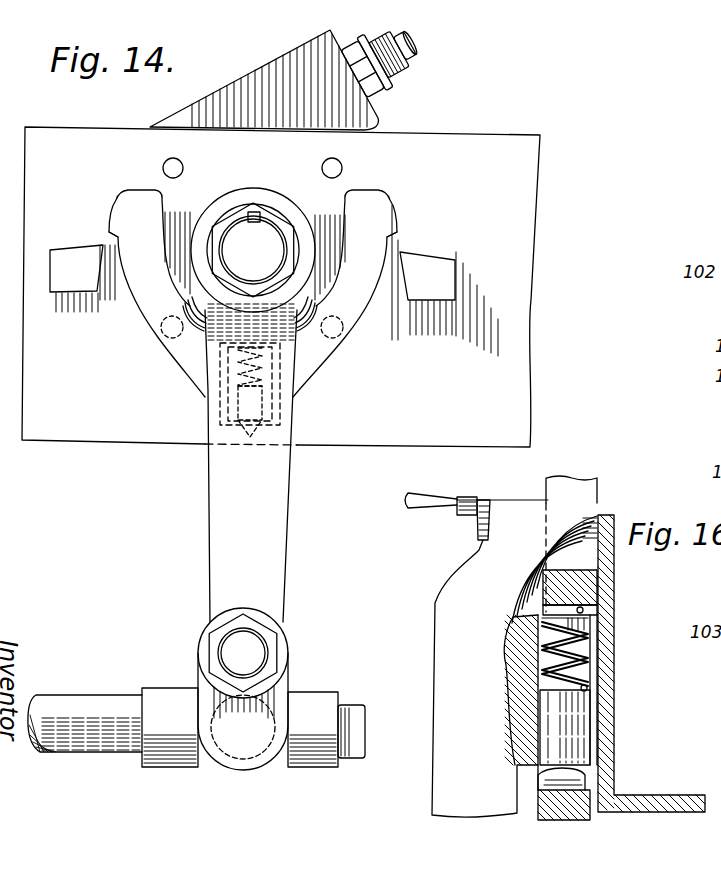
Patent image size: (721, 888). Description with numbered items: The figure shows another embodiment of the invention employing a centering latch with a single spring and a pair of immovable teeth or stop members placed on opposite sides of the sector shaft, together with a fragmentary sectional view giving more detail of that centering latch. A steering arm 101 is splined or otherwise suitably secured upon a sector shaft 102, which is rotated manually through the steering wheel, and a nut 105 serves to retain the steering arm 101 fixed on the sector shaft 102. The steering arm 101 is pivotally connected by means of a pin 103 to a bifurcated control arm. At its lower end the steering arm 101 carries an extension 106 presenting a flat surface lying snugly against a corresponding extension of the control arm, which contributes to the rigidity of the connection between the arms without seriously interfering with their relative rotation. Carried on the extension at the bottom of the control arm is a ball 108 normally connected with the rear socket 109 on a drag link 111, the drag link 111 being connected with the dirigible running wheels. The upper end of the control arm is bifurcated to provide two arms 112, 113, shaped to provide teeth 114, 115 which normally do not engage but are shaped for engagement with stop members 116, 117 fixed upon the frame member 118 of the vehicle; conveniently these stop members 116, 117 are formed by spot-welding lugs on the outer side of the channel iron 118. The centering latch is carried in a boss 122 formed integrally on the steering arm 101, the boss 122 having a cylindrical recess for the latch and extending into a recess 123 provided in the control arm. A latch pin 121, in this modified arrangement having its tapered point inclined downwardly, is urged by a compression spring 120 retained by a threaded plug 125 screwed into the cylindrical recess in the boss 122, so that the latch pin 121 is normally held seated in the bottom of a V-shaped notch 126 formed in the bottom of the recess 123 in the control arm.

In FIG. 14, the steering arm 101 is at (276, 546).
In FIG. 16, the steering arm 101 is at (501, 655).
In FIG. 14, the sector shaft 102 is at (262, 236).
In FIG. 14, the pin 103 is at (238, 649).
In FIG. 14, the nut 105 is at (238, 212).
In FIG. 14, the extension 106 is at (214, 762).
In FIG. 14, the ball 108 is at (274, 768).
In FIG. 14, the rear socket 109 is at (322, 692).
In FIG. 16, the rear socket 109 is at (538, 805).
In FIG. 14, the drag link 111 is at (70, 695).
In FIG. 14, the arm 112 is at (148, 312).
In FIG. 14, the arm 113 is at (360, 312).
In FIG. 14, the tooth 114 is at (116, 220).
In FIG. 14, the tooth 115 is at (397, 230).
In FIG. 14, the stop member 116 is at (92, 247).
In FIG. 14, the stop member 117 is at (408, 260).
In FIG. 14, the frame member 118 is at (456, 142).
In FIG. 16, the frame member 118 is at (652, 795).
In FIG. 14, the spring 120 is at (236, 368).
In FIG. 16, the spring 120 is at (590, 642).
In FIG. 14, the latch pin 121 is at (236, 402).
In FIG. 16, the latch pin 121 is at (574, 728).
In FIG. 14, the boss 122 is at (281, 391).
In FIG. 16, the boss 122 is at (596, 714).
In FIG. 14, the recess 123 is at (281, 415).
In FIG. 16, the recess 123 is at (600, 588).
In FIG. 16, the threaded plug 125 is at (598, 611).
In FIG. 14, the V-shaped notch 126 is at (258, 432).
In FIG. 16, the V-shaped notch 126 is at (538, 782).